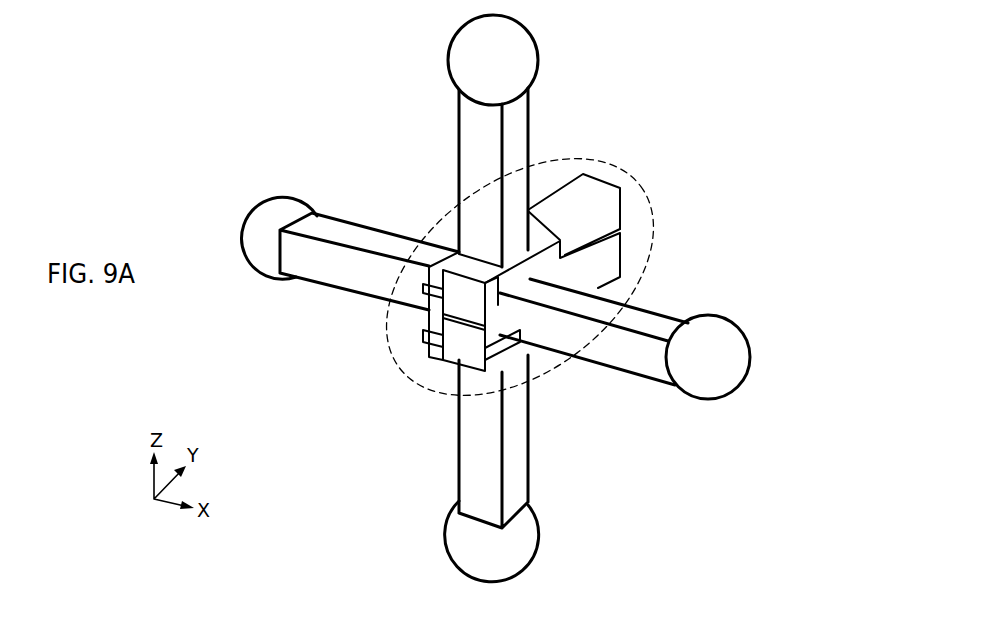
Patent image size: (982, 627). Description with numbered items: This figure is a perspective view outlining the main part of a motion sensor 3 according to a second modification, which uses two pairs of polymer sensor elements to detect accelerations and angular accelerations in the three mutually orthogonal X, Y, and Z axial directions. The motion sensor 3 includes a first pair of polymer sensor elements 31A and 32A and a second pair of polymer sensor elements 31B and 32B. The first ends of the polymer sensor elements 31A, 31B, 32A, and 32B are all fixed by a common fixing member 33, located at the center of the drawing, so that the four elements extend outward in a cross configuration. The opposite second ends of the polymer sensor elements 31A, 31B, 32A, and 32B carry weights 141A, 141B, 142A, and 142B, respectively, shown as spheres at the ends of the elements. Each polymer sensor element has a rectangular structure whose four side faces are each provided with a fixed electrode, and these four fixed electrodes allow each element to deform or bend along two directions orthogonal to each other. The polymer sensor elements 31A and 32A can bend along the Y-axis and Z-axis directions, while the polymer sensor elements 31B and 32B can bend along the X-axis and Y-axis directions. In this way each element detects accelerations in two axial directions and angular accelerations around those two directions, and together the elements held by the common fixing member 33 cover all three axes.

The motion sensor 3 is at (733, 90).
The polymer sensor element 31A is at (372, 200).
The polymer sensor element 31B is at (555, 450).
The polymer sensor element 32A is at (671, 290).
The polymer sensor element 32B is at (560, 132).
The common fixing member 33 is at (690, 201).
The weight 141A is at (266, 240).
The weight 141B is at (532, 528).
The weight 142A is at (732, 358).
The weight 142B is at (522, 38).